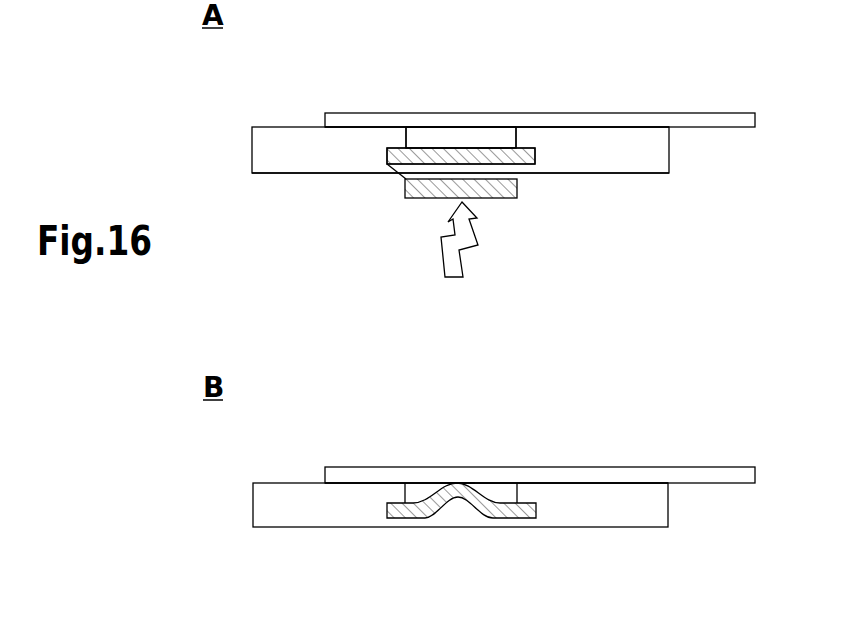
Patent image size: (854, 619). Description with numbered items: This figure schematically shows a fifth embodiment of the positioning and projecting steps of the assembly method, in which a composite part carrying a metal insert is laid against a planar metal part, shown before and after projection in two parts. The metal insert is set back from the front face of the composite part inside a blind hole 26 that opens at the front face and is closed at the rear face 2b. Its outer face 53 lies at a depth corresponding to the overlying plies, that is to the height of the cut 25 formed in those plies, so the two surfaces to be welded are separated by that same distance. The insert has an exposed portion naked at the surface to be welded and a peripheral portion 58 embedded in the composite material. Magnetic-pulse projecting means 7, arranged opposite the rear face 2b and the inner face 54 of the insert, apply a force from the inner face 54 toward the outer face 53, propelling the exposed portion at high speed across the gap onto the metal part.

The rear face of the composite part 2b is at (643, 185).
The cut 25 is at (529, 138).
The blind hole 26 is at (514, 176).
The outer face of the metal insert 53 is at (492, 136).
The inner face of the metal insert 54 is at (430, 181).
The peripheral portion 58 is at (392, 184).
The magnetic-pulse projecting means 7 is at (488, 200).